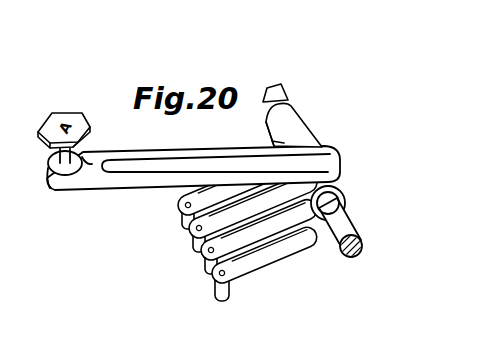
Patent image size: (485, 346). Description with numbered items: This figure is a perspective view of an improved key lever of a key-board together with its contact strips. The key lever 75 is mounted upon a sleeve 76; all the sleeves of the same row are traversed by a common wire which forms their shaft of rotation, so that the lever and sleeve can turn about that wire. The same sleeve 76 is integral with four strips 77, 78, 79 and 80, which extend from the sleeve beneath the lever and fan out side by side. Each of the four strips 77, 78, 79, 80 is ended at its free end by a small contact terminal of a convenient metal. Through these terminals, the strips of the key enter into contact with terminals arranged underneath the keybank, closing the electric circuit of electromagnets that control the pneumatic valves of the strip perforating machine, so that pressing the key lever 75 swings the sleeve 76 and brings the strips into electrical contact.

The key lever 75 is at (203, 150).
The sleeve 76 is at (312, 138).
The strip 77 is at (183, 203).
The strip 78 is at (196, 239).
The strip 79 is at (208, 263).
The strip 80 is at (229, 276).